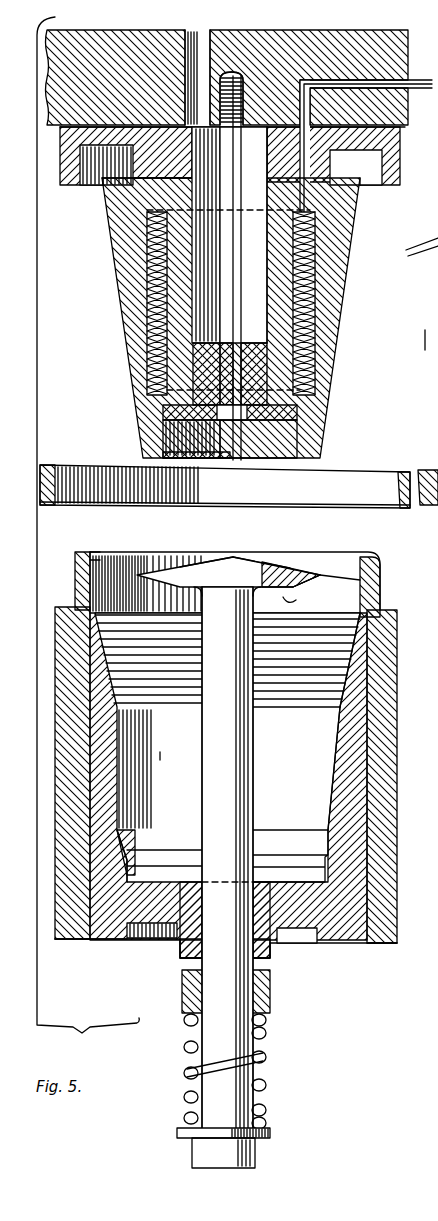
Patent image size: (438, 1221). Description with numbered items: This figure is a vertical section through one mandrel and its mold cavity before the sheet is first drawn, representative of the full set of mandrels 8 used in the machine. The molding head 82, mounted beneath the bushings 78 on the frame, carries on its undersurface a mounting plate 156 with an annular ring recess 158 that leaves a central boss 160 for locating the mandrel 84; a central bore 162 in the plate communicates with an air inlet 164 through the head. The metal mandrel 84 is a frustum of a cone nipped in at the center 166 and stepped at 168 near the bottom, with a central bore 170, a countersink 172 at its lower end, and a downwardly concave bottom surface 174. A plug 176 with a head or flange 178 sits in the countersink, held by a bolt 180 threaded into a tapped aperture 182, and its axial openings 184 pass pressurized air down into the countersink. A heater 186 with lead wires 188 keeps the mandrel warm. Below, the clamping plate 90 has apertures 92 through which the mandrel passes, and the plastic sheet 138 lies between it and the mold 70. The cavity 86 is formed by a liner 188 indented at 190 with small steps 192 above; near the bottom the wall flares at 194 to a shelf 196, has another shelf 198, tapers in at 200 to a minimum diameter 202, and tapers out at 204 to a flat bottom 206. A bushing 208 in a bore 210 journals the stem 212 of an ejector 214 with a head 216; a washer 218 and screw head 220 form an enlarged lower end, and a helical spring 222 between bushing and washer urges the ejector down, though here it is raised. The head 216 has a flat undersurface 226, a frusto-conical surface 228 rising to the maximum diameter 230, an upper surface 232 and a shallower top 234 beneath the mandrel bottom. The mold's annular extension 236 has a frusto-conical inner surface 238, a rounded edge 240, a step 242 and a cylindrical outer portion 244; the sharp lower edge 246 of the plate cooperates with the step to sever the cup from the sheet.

The bore surface 8 is at (160, 748).
The mold 70 is at (380, 947).
The bushings 78 is at (431, 340).
The molding head 82 is at (112, 43).
The mandrel 84 is at (127, 250).
The cavity 86 is at (370, 740).
The clamping plate 90 is at (405, 470).
The apertures 92 is at (62, 467).
The sheet 138 is at (135, 468).
The mounting plate 156 is at (137, 132).
The annular ring recess 158 is at (97, 150).
The central boss 160 is at (117, 213).
The central bore 162 is at (253, 128).
The air inlet 164 is at (199, 40).
The nipped-in center 166 is at (338, 307).
The step 168 is at (323, 440).
The central bore 170 is at (277, 252).
The countersink 172 is at (333, 393).
The concave bottom surface 174 is at (320, 447).
The plug 176 is at (253, 347).
The head or flange 178 is at (263, 363).
The bolt 180 is at (237, 228).
The tapped aperture 182 is at (245, 80).
The axial openings 184 is at (157, 318).
The heater 186 is at (157, 277).
The liner 188 is at (353, 80).
The indented center section 190 is at (107, 717).
The small steps 192 is at (337, 667).
The outward flare 194 is at (333, 838).
The shelf or step 196 is at (127, 820).
The shelf or step 198 is at (135, 837).
The inward taper 200 is at (85, 910).
The minimum diameter position 202 is at (127, 933).
The outward taper 204 is at (112, 937).
The flat bottom 206 is at (293, 932).
The bushing 208 is at (177, 913).
The bore 210 is at (283, 882).
The stem 212 is at (240, 752).
The ejector 214 is at (200, 785).
The head 216 is at (272, 560).
The washer 218 is at (177, 1132).
The head 220 is at (200, 1150).
The helical spring 222 is at (260, 1060).
The flat undersurface 226 is at (287, 595).
The frusto-conical surface 228 is at (333, 583).
The maximum diameter position 230 is at (192, 560).
The upper surface 232 is at (300, 555).
The top surface section 234 is at (217, 557).
The annular upstanding extension 236 is at (377, 603).
The frusto-conical inner surface 238 is at (135, 560).
The rounded edge 240 is at (95, 555).
The step 242 is at (95, 553).
The cylindrical outer portion 244 is at (80, 590).
The sharp lower edge 246 is at (143, 187).